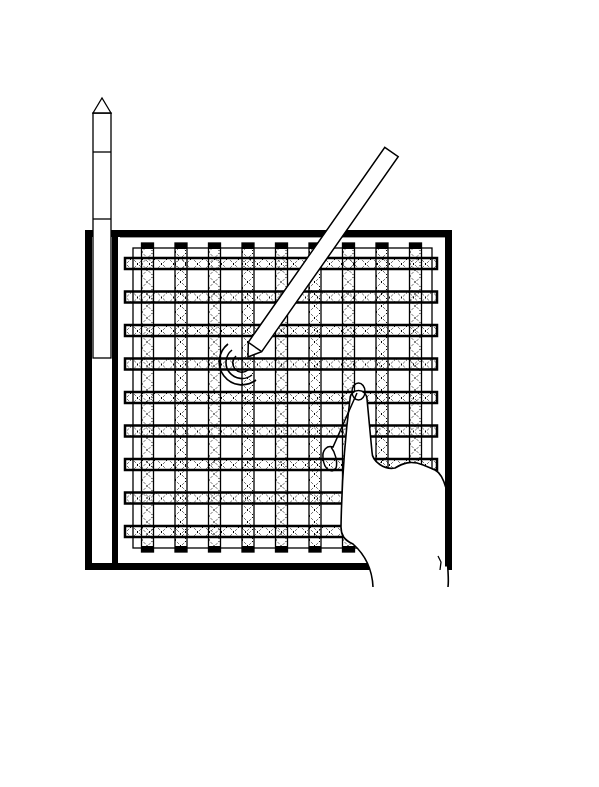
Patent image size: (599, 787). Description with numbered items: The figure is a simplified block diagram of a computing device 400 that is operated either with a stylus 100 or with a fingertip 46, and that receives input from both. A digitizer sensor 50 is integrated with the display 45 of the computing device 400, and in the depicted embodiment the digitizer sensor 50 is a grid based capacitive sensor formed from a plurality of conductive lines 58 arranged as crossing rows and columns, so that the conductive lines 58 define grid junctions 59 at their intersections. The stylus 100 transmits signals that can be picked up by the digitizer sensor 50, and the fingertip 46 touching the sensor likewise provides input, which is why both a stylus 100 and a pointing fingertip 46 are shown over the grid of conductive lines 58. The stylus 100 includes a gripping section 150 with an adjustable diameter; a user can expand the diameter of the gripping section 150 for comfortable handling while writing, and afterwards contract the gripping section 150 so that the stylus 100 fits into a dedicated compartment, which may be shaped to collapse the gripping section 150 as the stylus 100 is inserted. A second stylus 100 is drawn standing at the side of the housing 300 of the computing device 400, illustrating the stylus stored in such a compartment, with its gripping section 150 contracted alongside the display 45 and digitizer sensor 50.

The computing device 400 is at (274, 92).
The electronic device housing 300 is at (85, 483).
The display 45 is at (382, 231).
The digitizer sensor 50 is at (433, 283).
The conductive lines 58 is at (278, 247).
The grid junctions 59 is at (243, 498).
The stylus 100 is at (97, 143).
The gripping section 150 is at (100, 196).
The fingertip 46 is at (328, 465).